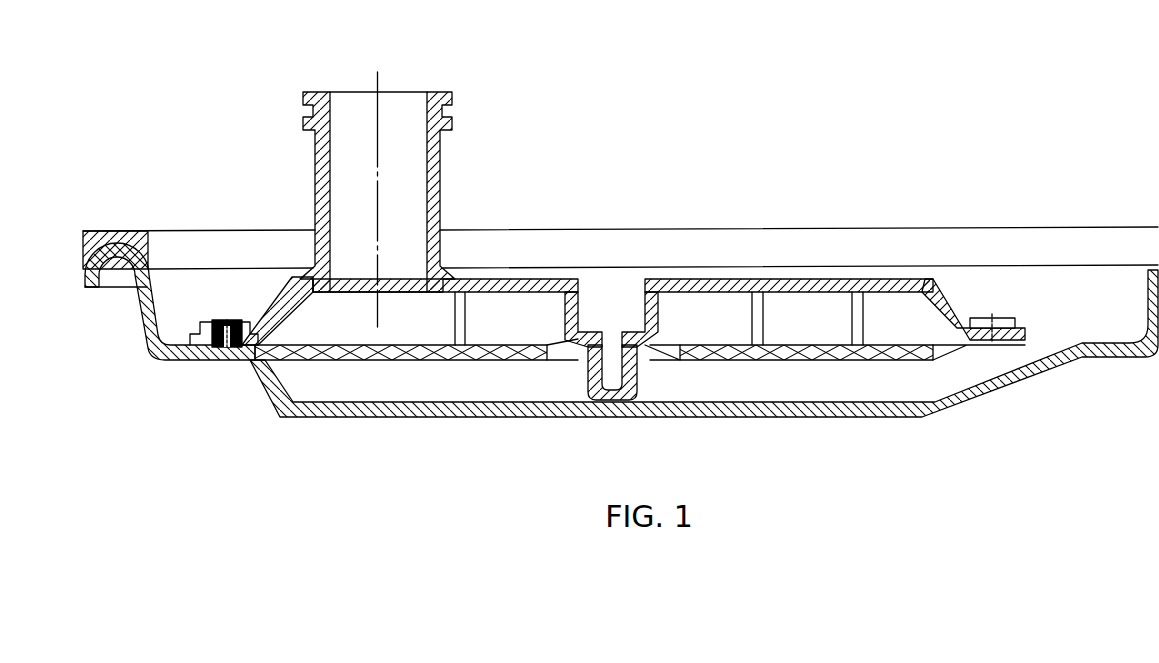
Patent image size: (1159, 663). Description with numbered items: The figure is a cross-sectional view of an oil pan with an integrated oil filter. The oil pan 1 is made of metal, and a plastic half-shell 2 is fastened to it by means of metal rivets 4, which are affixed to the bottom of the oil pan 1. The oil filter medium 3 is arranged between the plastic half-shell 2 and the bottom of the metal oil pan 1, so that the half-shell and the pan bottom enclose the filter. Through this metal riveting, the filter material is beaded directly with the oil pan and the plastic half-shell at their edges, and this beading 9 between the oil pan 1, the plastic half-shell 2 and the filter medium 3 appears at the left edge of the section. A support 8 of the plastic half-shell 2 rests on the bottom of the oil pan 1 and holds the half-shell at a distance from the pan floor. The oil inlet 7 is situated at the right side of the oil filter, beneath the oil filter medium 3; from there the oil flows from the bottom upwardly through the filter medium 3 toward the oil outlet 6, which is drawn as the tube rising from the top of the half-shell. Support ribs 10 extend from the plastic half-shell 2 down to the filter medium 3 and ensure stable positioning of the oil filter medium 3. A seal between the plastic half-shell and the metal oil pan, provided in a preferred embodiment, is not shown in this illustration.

The oil pan 1 is at (430, 417).
The plastic half-shell 2 is at (536, 278).
The oil filter medium 3 is at (503, 360).
The metal rivets 4 is at (222, 350).
The oil outlet 6 is at (404, 92).
The oil inlet 7 is at (1003, 364).
The support 8 is at (612, 400).
The beading 9 is at (172, 354).
The support ribs 10 is at (763, 313).